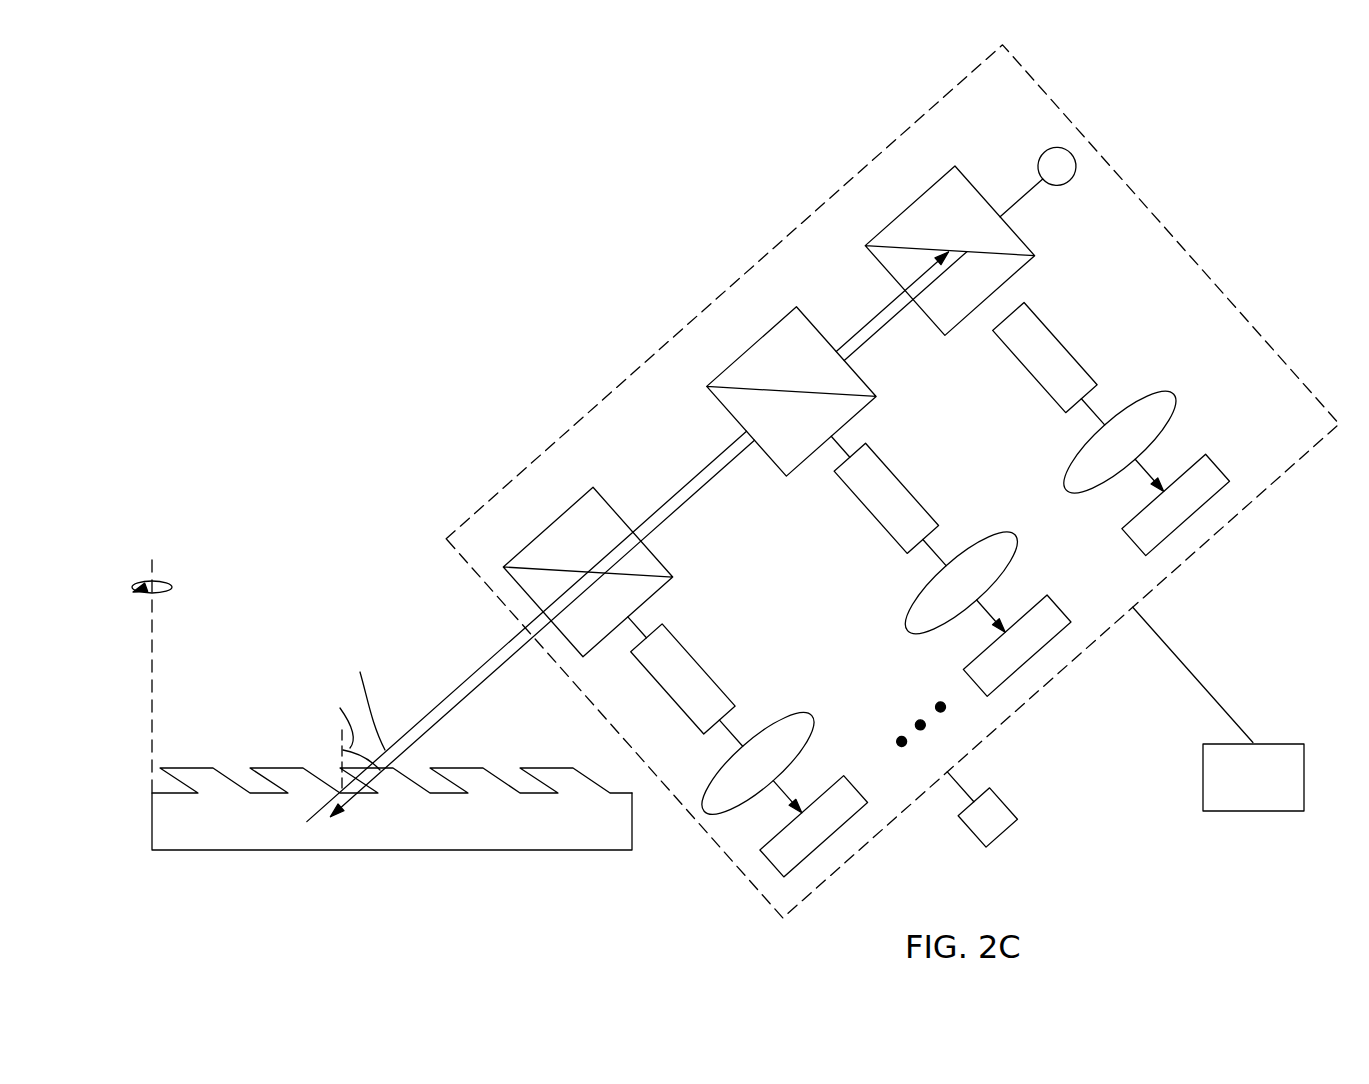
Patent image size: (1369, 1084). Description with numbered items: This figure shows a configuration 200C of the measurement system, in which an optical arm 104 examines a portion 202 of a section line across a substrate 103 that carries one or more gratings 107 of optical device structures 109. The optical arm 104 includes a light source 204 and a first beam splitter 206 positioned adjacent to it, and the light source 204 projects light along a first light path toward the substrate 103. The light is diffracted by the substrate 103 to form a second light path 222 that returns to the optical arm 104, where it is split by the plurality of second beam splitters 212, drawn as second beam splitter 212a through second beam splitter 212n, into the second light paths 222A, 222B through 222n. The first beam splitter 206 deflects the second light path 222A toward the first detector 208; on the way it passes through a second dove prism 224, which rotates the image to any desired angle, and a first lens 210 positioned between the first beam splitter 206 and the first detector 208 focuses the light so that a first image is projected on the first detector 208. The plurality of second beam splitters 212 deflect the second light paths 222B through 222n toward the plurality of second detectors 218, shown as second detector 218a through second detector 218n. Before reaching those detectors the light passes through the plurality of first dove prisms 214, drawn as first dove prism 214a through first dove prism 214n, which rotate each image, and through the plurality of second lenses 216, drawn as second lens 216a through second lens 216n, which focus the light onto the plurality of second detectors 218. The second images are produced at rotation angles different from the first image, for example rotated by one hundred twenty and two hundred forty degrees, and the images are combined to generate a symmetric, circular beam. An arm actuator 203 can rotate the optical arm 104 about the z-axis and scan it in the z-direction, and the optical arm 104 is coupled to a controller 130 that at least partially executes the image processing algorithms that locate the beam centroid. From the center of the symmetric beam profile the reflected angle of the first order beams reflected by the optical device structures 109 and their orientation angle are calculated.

The configuration 200C is at (1262, 86).
The optical arm 104 is at (1168, 227).
The plurality of second beam splitters 212 is at (535, 533).
The second beam splitter 212a is at (577, 502).
The second beam splitter 212n is at (765, 336).
The first beam splitter 206 is at (921, 197).
The light source 204 is at (1077, 167).
The second light path 222 is at (637, 536).
The second light path 222A is at (728, 448).
The second light path 222B is at (634, 624).
The second light path 222n is at (840, 450).
The plurality of first dove prisms 214 is at (696, 689).
The first dove prism 214a is at (715, 675).
The first dove prism 214n is at (905, 480).
The second dove prism 224 is at (1060, 345).
The plurality of second lenses 216 is at (797, 803).
The second lens 216a is at (808, 720).
The second lens 216n is at (1012, 538).
The first lens 210 is at (1166, 402).
The plurality of second detectors 218 is at (849, 858).
The second detector 218a is at (840, 835).
The second detector 218n is at (1065, 658).
The first detector 208 is at (1218, 467).
The arm actuator 203 is at (1007, 808).
The controller 130 is at (1272, 792).
The portion 202 is at (376, 733).
The substrate 103 is at (429, 804).
The grating 107 is at (470, 852).
The optical device structures 109 is at (473, 777).